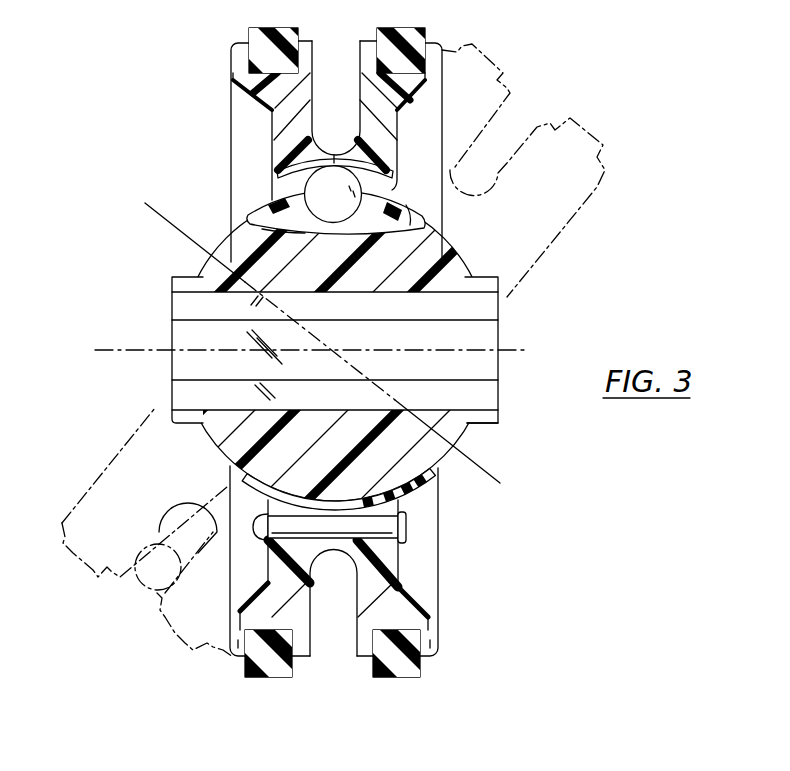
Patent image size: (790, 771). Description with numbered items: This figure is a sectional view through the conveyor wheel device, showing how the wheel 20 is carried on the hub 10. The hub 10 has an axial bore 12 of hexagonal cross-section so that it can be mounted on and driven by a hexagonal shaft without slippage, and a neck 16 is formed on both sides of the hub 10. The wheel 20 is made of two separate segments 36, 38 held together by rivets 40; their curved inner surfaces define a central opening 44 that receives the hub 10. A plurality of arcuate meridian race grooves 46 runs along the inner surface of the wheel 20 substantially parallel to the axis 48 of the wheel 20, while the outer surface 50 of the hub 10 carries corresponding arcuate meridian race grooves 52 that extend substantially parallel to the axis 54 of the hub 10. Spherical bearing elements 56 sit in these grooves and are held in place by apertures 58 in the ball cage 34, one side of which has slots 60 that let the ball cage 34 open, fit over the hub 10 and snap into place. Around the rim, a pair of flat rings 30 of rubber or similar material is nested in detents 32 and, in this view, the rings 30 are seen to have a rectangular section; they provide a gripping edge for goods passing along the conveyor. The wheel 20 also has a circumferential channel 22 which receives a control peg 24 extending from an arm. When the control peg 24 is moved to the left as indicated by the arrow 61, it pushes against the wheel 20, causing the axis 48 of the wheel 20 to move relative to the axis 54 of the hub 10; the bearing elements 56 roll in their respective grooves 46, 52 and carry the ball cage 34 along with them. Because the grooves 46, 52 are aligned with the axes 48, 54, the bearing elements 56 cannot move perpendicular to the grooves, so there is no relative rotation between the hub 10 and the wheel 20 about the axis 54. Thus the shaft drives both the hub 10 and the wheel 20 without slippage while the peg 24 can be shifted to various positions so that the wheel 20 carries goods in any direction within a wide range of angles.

The hub 10 is at (463, 259).
The axial bore 12 is at (488, 407).
The neck 16 is at (496, 424).
The wheel 20 is at (443, 563).
The circumferential channel 22 is at (358, 655).
The control peg 24 is at (324, 600).
The flat rings 30 is at (377, 33).
The detents 32 is at (252, 59).
The ball cage 34 is at (305, 196).
The segment 36 is at (228, 637).
The segment 38 is at (438, 633).
The rivets 40 is at (256, 536).
The central opening 44 is at (407, 200).
The arcuate meridian race grooves 46 is at (400, 207).
The axis 48 is at (490, 474).
The outer surface 50 is at (240, 232).
The arcuate meridian race grooves 52 is at (428, 213).
The axis 54 is at (513, 350).
The spherical bearing elements 56 is at (302, 158).
The apertures 58 is at (373, 160).
The slots 60 is at (250, 482).
The arrow 61 is at (322, 571).